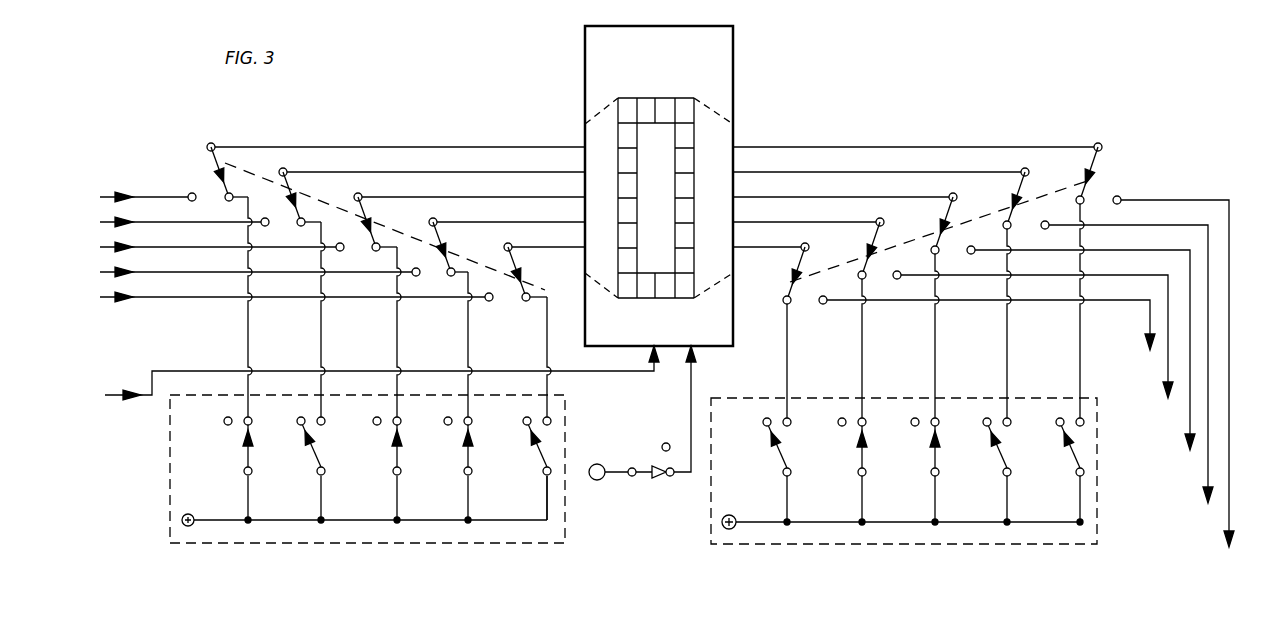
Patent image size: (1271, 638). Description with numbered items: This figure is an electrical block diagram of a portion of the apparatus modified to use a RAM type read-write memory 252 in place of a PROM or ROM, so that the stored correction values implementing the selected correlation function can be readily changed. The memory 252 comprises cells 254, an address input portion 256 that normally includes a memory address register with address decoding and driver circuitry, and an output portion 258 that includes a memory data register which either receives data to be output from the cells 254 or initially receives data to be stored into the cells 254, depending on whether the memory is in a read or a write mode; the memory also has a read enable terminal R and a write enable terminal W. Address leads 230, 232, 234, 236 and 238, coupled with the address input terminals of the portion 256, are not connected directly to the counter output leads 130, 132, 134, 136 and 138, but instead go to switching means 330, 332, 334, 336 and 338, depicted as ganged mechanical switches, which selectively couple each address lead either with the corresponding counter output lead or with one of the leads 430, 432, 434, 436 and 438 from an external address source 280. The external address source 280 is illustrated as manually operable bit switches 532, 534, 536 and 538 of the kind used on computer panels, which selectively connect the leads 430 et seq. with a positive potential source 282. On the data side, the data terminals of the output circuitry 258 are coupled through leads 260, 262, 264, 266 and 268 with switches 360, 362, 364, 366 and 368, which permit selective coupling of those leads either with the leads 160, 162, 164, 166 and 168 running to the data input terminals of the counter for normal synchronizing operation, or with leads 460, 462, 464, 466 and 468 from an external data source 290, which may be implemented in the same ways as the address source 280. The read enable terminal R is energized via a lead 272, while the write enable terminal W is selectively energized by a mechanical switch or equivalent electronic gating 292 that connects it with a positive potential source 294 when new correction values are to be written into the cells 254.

The counter output lead 130 is at (182, 195).
The counter output lead 132 is at (182, 220).
The counter output lead 134 is at (182, 245).
The counter output lead 136 is at (182, 270).
The counter output lead 138 is at (182, 295).
The data input lead 160 is at (1224, 500).
The data input lead 162 is at (1206, 455).
The data input lead 164 is at (1188, 418).
The data input lead 166 is at (1168, 370).
The data input lead 168 is at (1147, 337).
The address lead 230 is at (414, 146).
The address lead 232 is at (419, 171).
The address lead 234 is at (447, 196).
The address lead 236 is at (474, 221).
The address lead 238 is at (519, 246).
The RAM type read-write memory 252 is at (652, 16).
The memory cells 254 is at (687, 111).
The address input portion 256 is at (603, 275).
The output portion 258 is at (715, 272).
The data lead 260 is at (875, 147).
The data lead 262 is at (823, 172).
The data lead 264 is at (806, 197).
The data lead 266 is at (778, 222).
The data lead 268 is at (746, 247).
The read enable lead 272 is at (190, 370).
The external address source 280 is at (168, 470).
The positive potential source 282 is at (187, 514).
The external data source 290 is at (766, 393).
The write enable switch 292 is at (648, 468).
The positive potential source 294 is at (593, 480).
The switching means 330 is at (225, 163).
The switching means 332 is at (295, 189).
The switching means 334 is at (370, 214).
The switching means 336 is at (443, 240).
The switching means 338 is at (518, 265).
The switch 360 is at (1103, 164).
The switch 362 is at (1026, 175).
The switch 364 is at (958, 202).
The switch 366 is at (881, 222).
The switch 368 is at (813, 249).
The external address lead 430 is at (248, 327).
The external address lead 432 is at (321, 327).
The external address lead 434 is at (397, 327).
The external address lead 436 is at (468, 327).
The external address lead 438 is at (547, 327).
The external data lead 460 is at (1080, 357).
The external data lead 462 is at (1009, 333).
The external data lead 464 is at (937, 333).
The external data lead 466 is at (864, 333).
The external data lead 468 is at (789, 333).
The bit switch 532 is at (313, 460).
The bit switch 534 is at (246, 466).
The bit switch 536 is at (467, 466).
The bit switch 538 is at (536, 460).